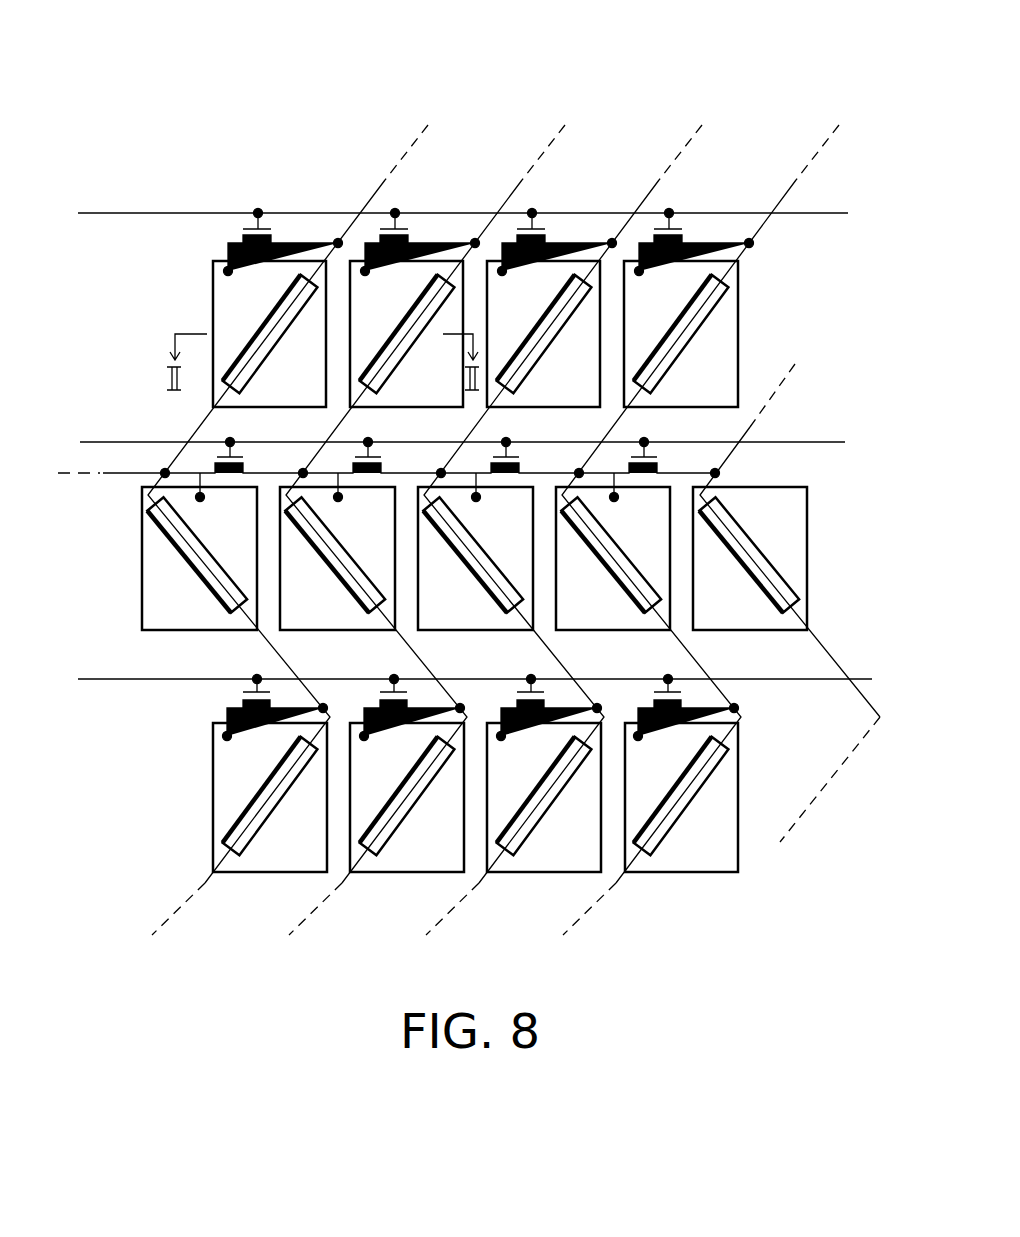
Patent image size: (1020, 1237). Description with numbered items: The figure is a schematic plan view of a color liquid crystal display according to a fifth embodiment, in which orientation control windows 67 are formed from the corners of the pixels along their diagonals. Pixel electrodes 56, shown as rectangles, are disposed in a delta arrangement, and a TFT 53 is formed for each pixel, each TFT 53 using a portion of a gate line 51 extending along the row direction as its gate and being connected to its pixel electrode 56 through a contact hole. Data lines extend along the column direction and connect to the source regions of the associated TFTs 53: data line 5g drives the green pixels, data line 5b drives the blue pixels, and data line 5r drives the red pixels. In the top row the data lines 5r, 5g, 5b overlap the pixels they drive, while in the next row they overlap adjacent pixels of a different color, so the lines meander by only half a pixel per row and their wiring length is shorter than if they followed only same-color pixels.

The data line for red pixels 5r is at (402, 155).
The data line for green pixels 5g is at (542, 155).
The data line for blue pixels 5b is at (679, 155).
The gate line 51 is at (490, 446).
The TFT 53 is at (413, 232).
The pixel electrode 56 is at (738, 360).
The orientation control window 67 is at (718, 305).